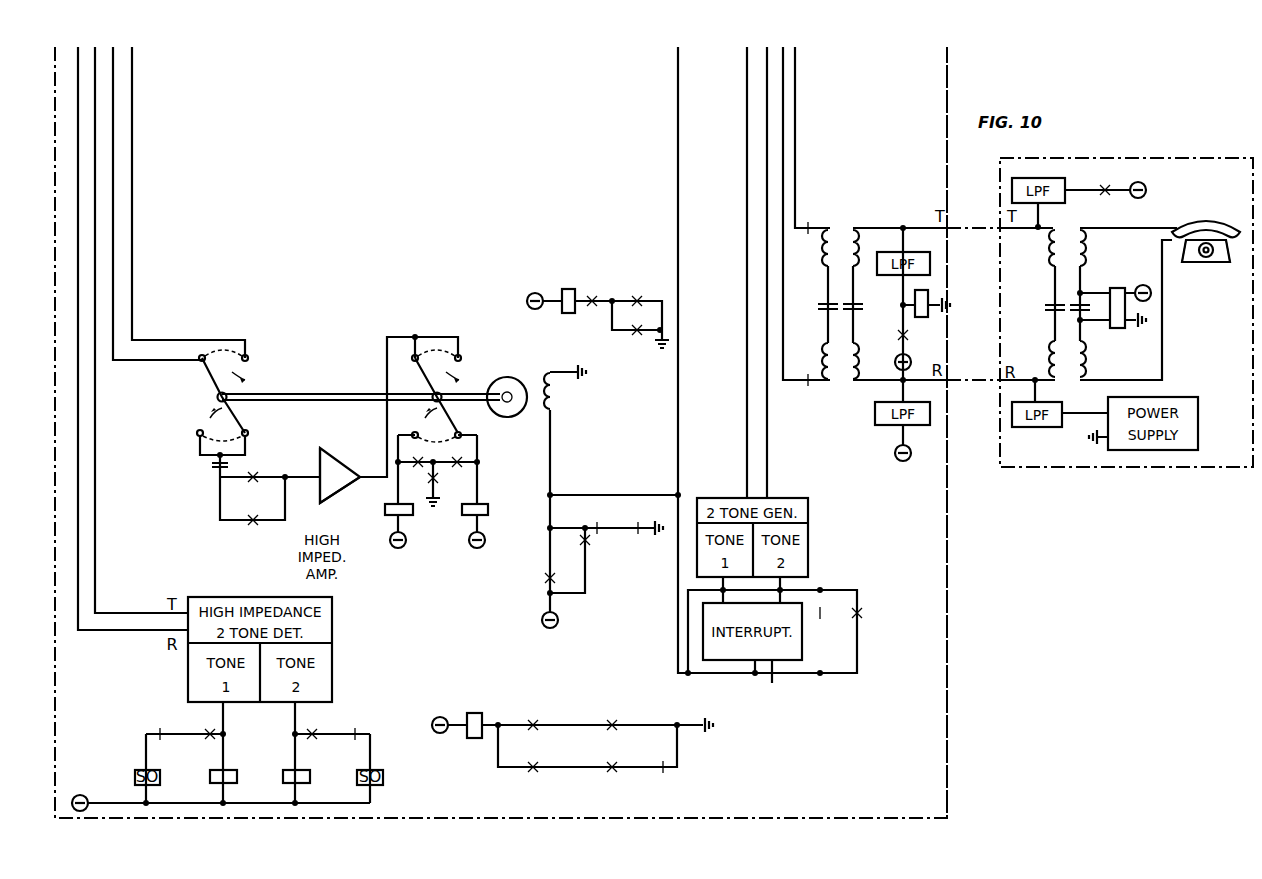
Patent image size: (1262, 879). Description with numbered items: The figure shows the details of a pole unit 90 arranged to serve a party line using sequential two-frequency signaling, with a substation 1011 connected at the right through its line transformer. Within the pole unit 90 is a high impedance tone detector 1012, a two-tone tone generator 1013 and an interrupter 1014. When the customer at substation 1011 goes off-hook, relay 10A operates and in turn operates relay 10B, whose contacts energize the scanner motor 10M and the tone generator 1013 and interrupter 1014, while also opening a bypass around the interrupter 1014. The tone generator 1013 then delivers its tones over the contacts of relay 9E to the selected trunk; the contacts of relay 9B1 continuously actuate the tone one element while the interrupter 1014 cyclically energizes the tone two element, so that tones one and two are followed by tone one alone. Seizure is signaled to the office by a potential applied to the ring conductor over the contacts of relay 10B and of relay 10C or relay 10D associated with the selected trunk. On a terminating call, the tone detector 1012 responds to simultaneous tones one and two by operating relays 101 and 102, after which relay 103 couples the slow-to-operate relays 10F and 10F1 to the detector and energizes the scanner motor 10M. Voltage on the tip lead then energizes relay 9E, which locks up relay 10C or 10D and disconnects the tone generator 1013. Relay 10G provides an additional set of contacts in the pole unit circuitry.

The relay 10G contacts 10G is at (414, 380).
The relay 10B is at (255, 472).
The relay 103 is at (418, 637).
The relay 10D is at (417, 468).
The relay 9E is at (776, 472).
The relay 10C is at (461, 461).
The scanner motor 10M is at (526, 378).
The relay 10F is at (898, 317).
The relay 10F1 is at (383, 777).
The relay 101 is at (237, 777).
The relay 102 is at (290, 773).
The tone detector 1012 is at (332, 657).
The tone generator 1013 is at (808, 540).
The interrupter 1014 is at (753, 652).
The relay 9B1 is at (688, 613).
The pole unit 90 is at (948, 502).
The relay 10A is at (1109, 245).
The substation 1011 is at (1206, 230).